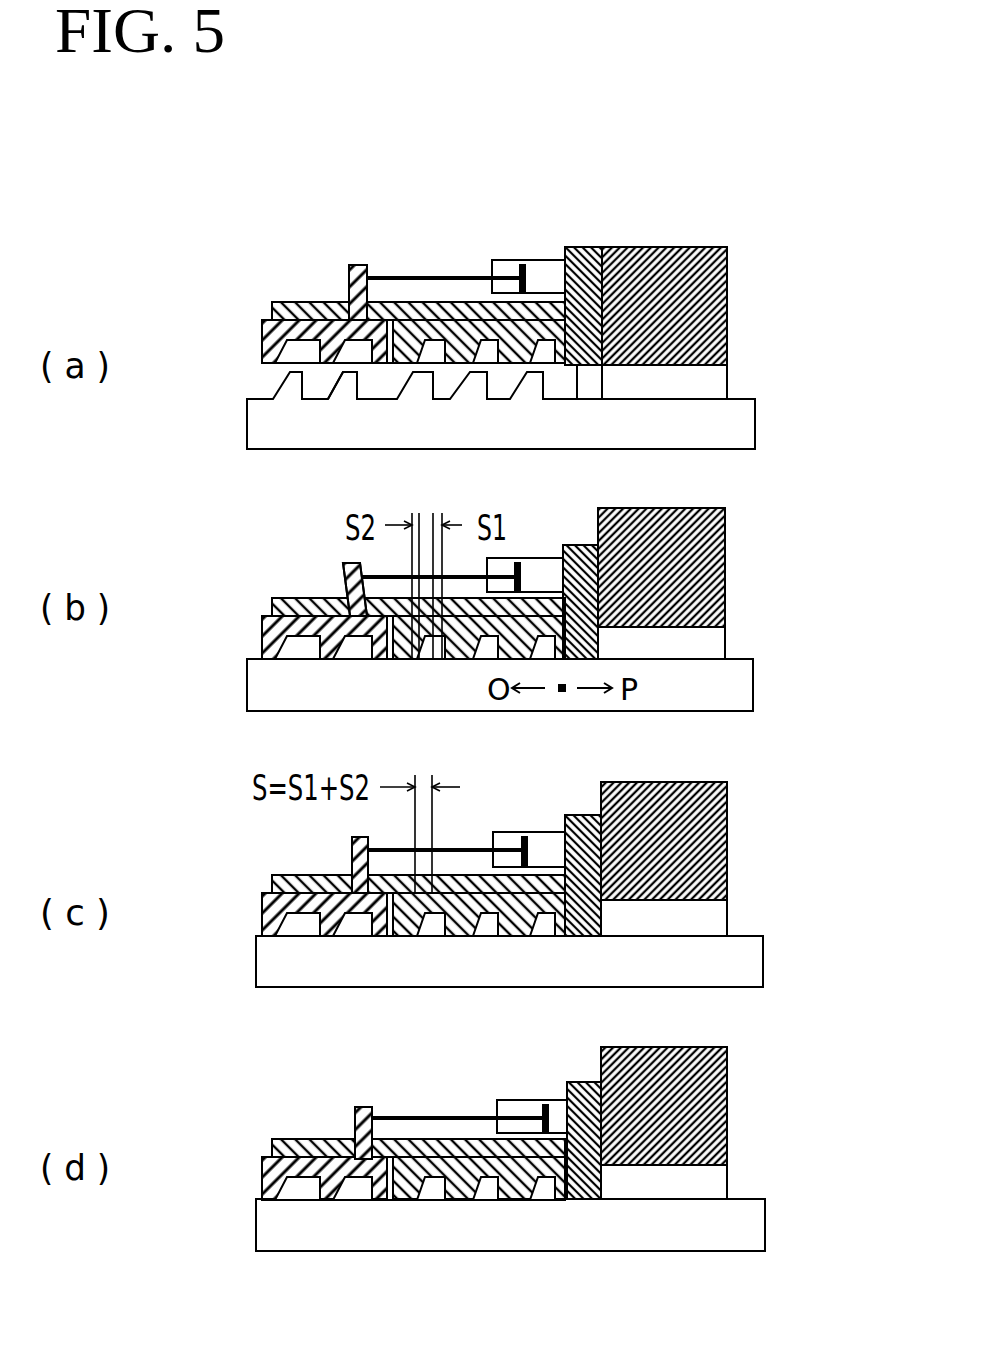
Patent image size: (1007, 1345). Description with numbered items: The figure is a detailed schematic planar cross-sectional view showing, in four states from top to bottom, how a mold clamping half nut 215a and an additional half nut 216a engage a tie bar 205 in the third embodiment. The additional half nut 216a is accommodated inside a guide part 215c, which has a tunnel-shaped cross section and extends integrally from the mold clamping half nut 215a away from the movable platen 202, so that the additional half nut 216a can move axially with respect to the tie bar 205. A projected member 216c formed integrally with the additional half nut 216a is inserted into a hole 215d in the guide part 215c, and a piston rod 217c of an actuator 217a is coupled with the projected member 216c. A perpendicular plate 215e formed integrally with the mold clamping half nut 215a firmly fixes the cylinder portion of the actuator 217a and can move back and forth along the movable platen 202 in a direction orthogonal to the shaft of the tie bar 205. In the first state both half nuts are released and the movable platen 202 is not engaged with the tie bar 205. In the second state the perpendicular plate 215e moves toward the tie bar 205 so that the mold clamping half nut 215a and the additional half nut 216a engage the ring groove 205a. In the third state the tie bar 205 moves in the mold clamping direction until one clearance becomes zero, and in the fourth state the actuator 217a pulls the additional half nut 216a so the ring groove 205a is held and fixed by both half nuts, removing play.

The movable platen 202 is at (673, 302).
The tie bar 205 is at (672, 430).
The ring groove 205a is at (343, 388).
The mold clamping half nut 215a is at (453, 307).
The guide part 215c is at (302, 600).
The hole 215d is at (351, 1140).
The perpendicular plate 215e is at (577, 365).
The additional half nut 216a is at (265, 323).
The projected member 216c is at (356, 264).
The actuator 217a is at (542, 283).
The piston rod 217c is at (456, 1114).